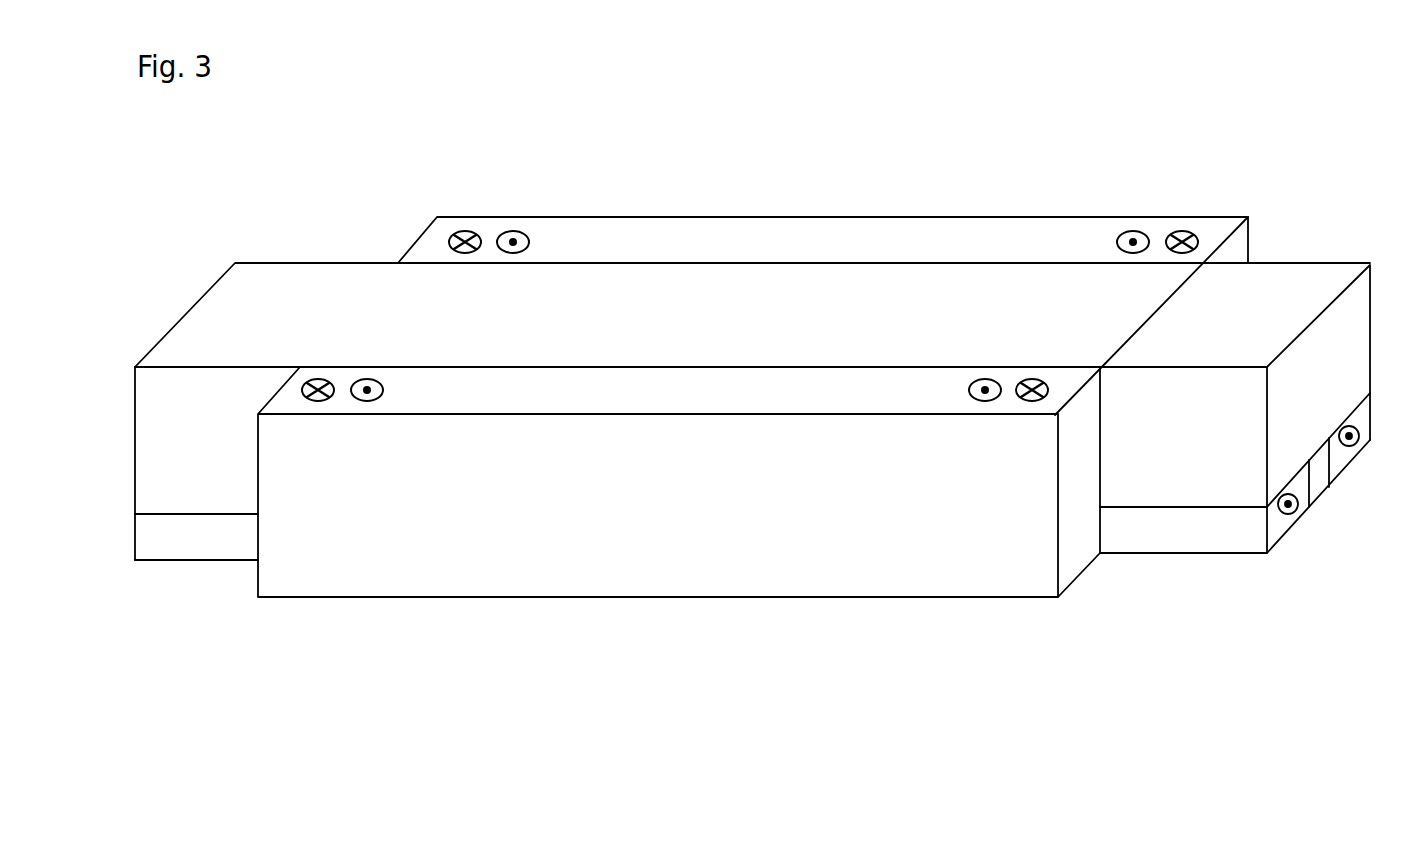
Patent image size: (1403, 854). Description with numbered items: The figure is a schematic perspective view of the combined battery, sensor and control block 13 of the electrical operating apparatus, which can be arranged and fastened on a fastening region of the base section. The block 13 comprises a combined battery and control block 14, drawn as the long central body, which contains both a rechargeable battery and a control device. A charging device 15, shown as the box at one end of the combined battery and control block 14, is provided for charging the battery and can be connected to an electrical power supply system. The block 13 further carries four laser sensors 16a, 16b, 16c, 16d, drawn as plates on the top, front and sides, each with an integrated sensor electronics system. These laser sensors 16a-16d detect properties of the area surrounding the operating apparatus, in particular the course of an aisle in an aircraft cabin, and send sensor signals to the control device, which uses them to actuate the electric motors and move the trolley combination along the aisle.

The combined battery, sensor and control block 13 is at (1027, 170).
The combined battery and control block 14 is at (843, 295).
The charging device 15 is at (1283, 288).
The laser sensor 16a is at (622, 230).
The laser sensor 16b is at (905, 545).
The laser sensor 16c is at (1168, 535).
The laser sensor 16d is at (196, 545).